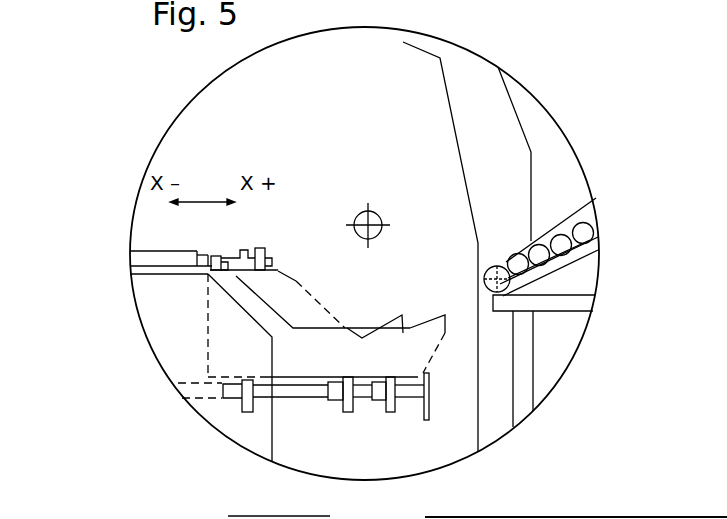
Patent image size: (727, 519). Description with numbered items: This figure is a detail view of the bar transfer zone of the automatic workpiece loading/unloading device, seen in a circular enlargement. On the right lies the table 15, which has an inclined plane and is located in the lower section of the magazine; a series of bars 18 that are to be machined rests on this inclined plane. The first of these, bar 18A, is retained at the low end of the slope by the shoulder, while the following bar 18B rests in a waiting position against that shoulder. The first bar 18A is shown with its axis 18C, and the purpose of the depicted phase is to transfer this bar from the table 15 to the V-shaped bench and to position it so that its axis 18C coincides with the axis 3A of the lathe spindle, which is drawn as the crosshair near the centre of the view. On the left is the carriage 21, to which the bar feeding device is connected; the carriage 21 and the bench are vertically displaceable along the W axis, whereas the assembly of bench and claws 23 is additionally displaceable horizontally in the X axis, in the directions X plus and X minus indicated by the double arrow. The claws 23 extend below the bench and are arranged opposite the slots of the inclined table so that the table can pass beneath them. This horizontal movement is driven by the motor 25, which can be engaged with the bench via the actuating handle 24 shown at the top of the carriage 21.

The axis 3A is at (368, 225).
The table 15 is at (582, 255).
The bars 18 is at (590, 205).
The first bar 18A is at (497, 292).
The bar 18B is at (538, 270).
The axis 18C is at (497, 279).
The carriage 21 is at (363, 333).
The claws 23 is at (352, 362).
The actuating handle 24 is at (232, 252).
The motor 25 is at (175, 255).